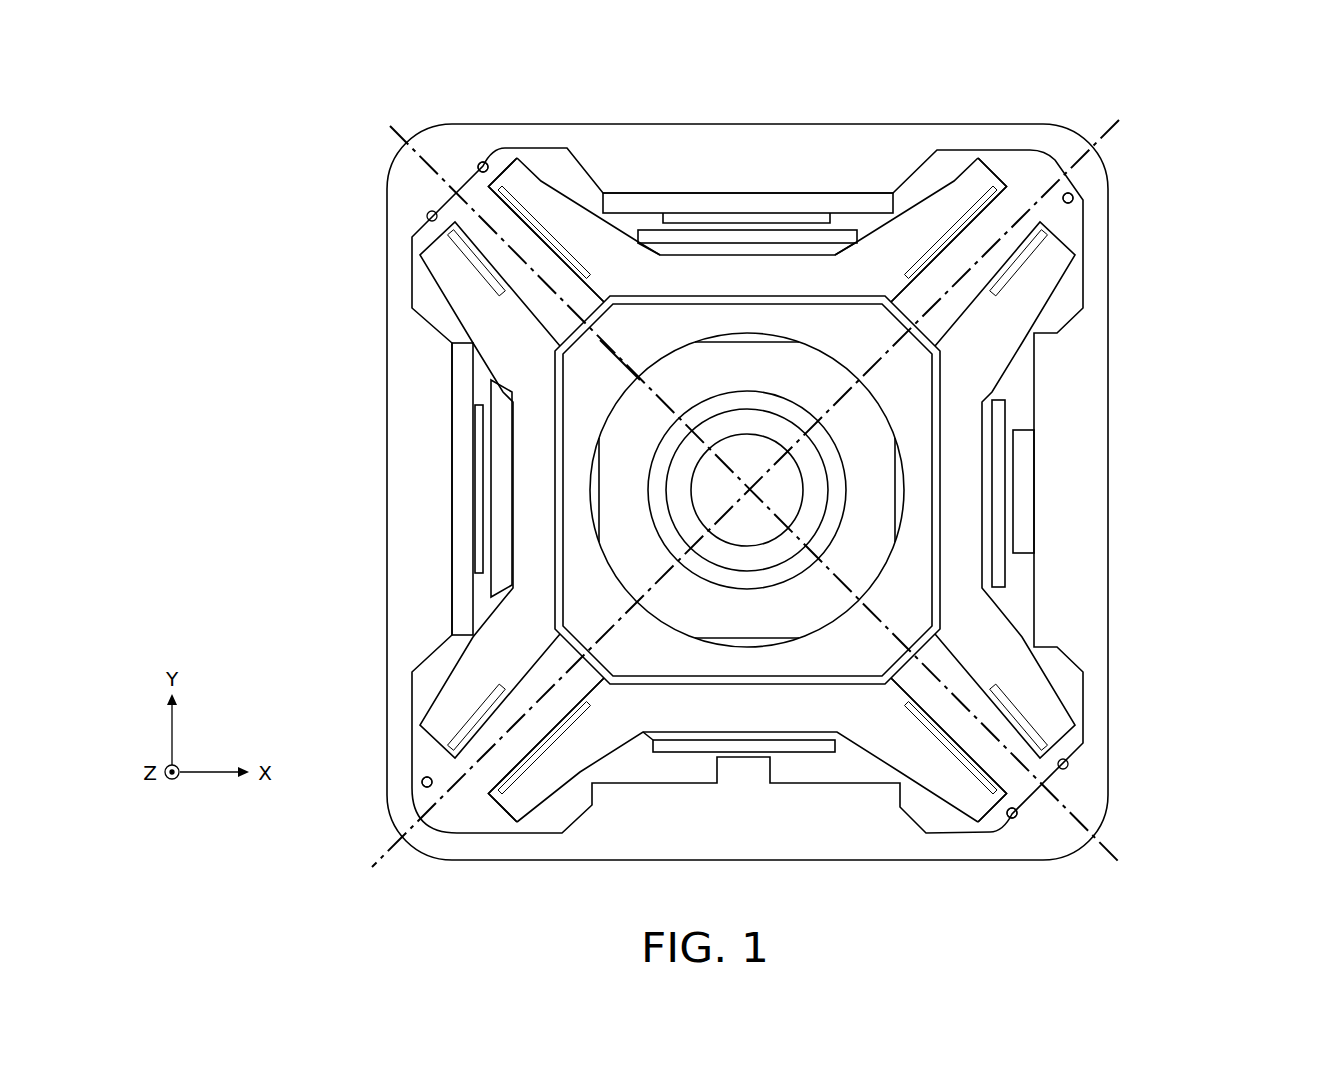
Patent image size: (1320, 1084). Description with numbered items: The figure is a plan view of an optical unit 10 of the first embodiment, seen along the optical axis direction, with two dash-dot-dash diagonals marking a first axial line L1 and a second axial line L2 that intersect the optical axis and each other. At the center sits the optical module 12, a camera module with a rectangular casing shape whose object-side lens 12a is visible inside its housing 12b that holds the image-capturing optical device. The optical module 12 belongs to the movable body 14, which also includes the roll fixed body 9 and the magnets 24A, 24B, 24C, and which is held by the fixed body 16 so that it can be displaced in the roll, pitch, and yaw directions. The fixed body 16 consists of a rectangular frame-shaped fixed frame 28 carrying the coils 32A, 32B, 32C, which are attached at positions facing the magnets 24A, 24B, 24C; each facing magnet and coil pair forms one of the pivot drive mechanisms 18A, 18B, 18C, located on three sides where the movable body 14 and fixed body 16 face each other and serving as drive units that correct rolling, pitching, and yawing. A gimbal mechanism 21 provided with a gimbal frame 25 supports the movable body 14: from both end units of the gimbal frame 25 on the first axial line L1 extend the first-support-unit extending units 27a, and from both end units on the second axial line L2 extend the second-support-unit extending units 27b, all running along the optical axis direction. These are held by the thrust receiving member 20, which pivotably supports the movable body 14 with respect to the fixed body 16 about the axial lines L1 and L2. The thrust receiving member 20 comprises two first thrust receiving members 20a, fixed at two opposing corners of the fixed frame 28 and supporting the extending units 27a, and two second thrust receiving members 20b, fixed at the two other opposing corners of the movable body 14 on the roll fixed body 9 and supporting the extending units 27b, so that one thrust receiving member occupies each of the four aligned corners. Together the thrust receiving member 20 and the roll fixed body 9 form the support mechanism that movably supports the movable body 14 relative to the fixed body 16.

The roll fixed body 9 is at (482, 658).
The optical unit 10 is at (1208, 160).
The optical module 12 is at (785, 88).
The lens 12a is at (748, 462).
The housing 12b is at (835, 375).
The movable body 14 is at (1006, 372).
The fixed body 16 is at (1112, 355).
The pivot drive mechanism 18A is at (748, 148).
The pivot drive mechanism 18B is at (363, 489).
The pivot drive mechanism 18C is at (1121, 493).
The thrust receiving member 20 is at (486, 160).
The first thrust receiving member 20a is at (1040, 812).
The second thrust receiving member 20b is at (1052, 168).
The gimbal mechanism 21 is at (630, 318).
The magnet 24A is at (735, 238).
The magnet 24B is at (500, 455).
The magnet 24C is at (1003, 440).
The gimbal frame 25 is at (880, 335).
The first-support-unit extending unit 27a is at (446, 192).
The second-support-unit extending unit 27b is at (1060, 190).
The fixed frame 28 is at (1098, 278).
The coil 32A is at (637, 200).
The coil 32B is at (456, 540).
The coil 32C is at (1030, 497).
The first axial line L1 is at (739, 481).
The second axial line L2 is at (759, 484).